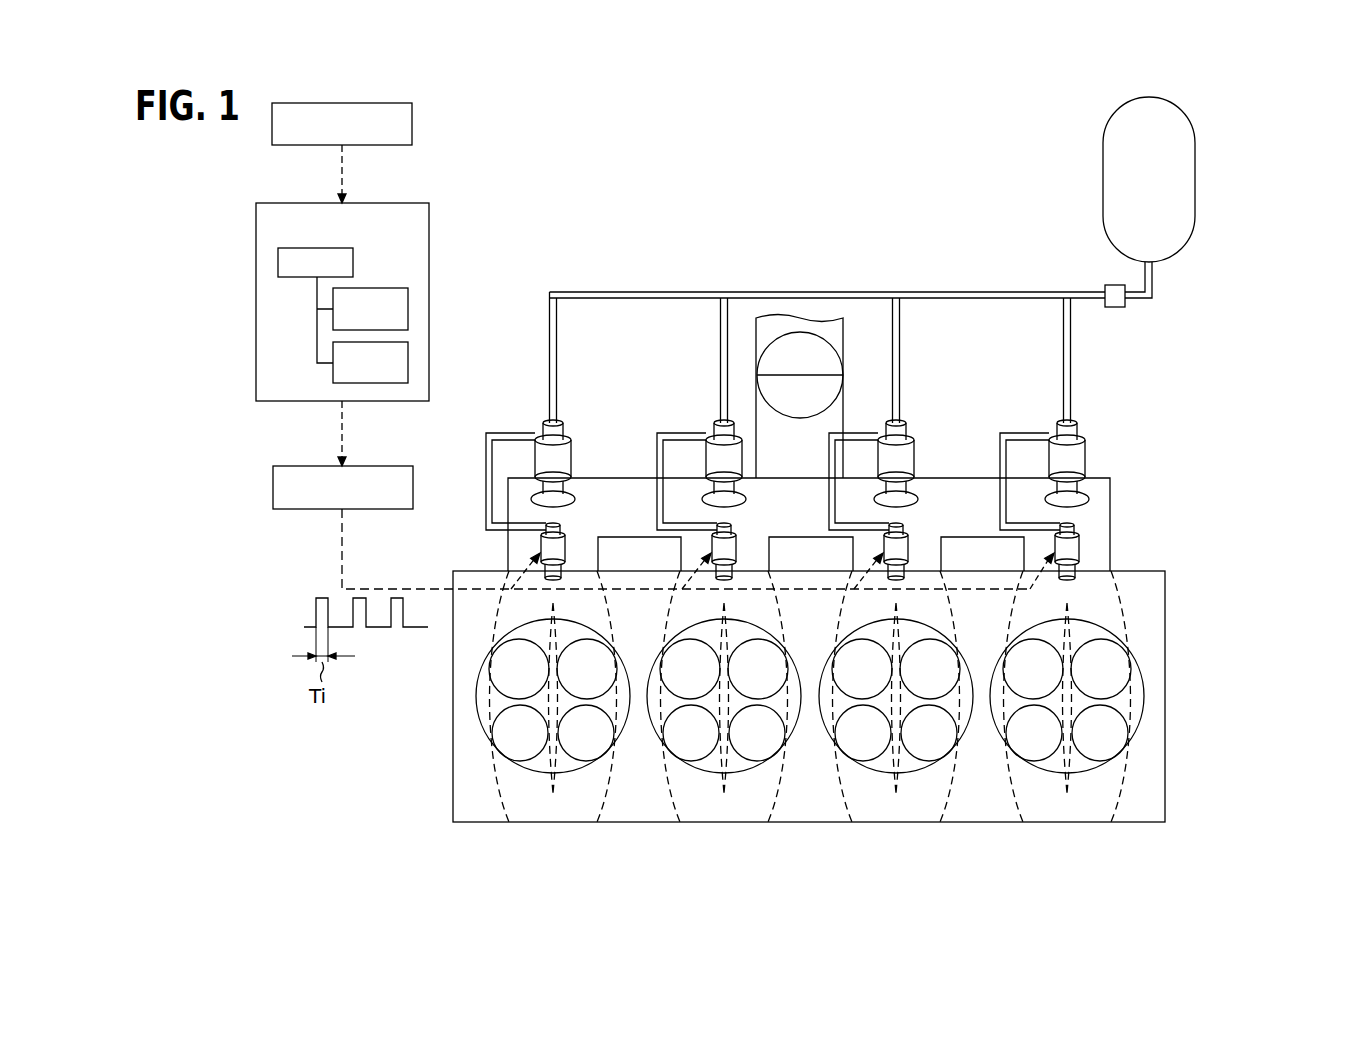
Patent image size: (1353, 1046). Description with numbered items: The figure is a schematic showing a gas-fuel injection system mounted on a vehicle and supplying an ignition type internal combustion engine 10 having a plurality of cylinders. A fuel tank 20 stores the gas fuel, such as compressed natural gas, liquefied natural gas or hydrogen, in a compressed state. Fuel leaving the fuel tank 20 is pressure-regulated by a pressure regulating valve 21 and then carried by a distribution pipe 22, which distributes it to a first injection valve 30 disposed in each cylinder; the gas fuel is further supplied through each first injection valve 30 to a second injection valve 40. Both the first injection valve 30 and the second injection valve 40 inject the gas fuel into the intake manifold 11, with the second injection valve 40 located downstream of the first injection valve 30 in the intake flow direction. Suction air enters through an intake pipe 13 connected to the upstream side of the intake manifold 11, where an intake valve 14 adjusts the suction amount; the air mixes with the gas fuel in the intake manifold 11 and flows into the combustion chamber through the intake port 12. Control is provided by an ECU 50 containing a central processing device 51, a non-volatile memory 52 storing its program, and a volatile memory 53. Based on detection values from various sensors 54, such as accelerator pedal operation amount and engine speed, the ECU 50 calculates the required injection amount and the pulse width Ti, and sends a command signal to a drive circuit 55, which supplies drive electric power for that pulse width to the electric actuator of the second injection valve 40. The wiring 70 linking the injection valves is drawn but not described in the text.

The internal combustion engine 10 is at (1165, 784).
The intake manifold 11 is at (1110, 545).
The intake port 12 is at (1052, 677).
The intake pipe 13 is at (843, 330).
The intake valve 14 is at (797, 342).
The fuel tank 20 is at (1103, 150).
The pressure regulating valve 21 is at (1113, 307).
The distribution pipe 22 is at (983, 292).
The first injection valve 30 is at (825, 399).
The second injection valve 40 is at (819, 544).
The ECU 50 is at (429, 218).
The central processing device 51 is at (353, 262).
The non-volatile memory 52 is at (408, 308).
The volatile memory 53 is at (408, 362).
The sensors 54 is at (412, 124).
The drive circuit 55 is at (413, 487).
The wiring harness 70 is at (773, 456).